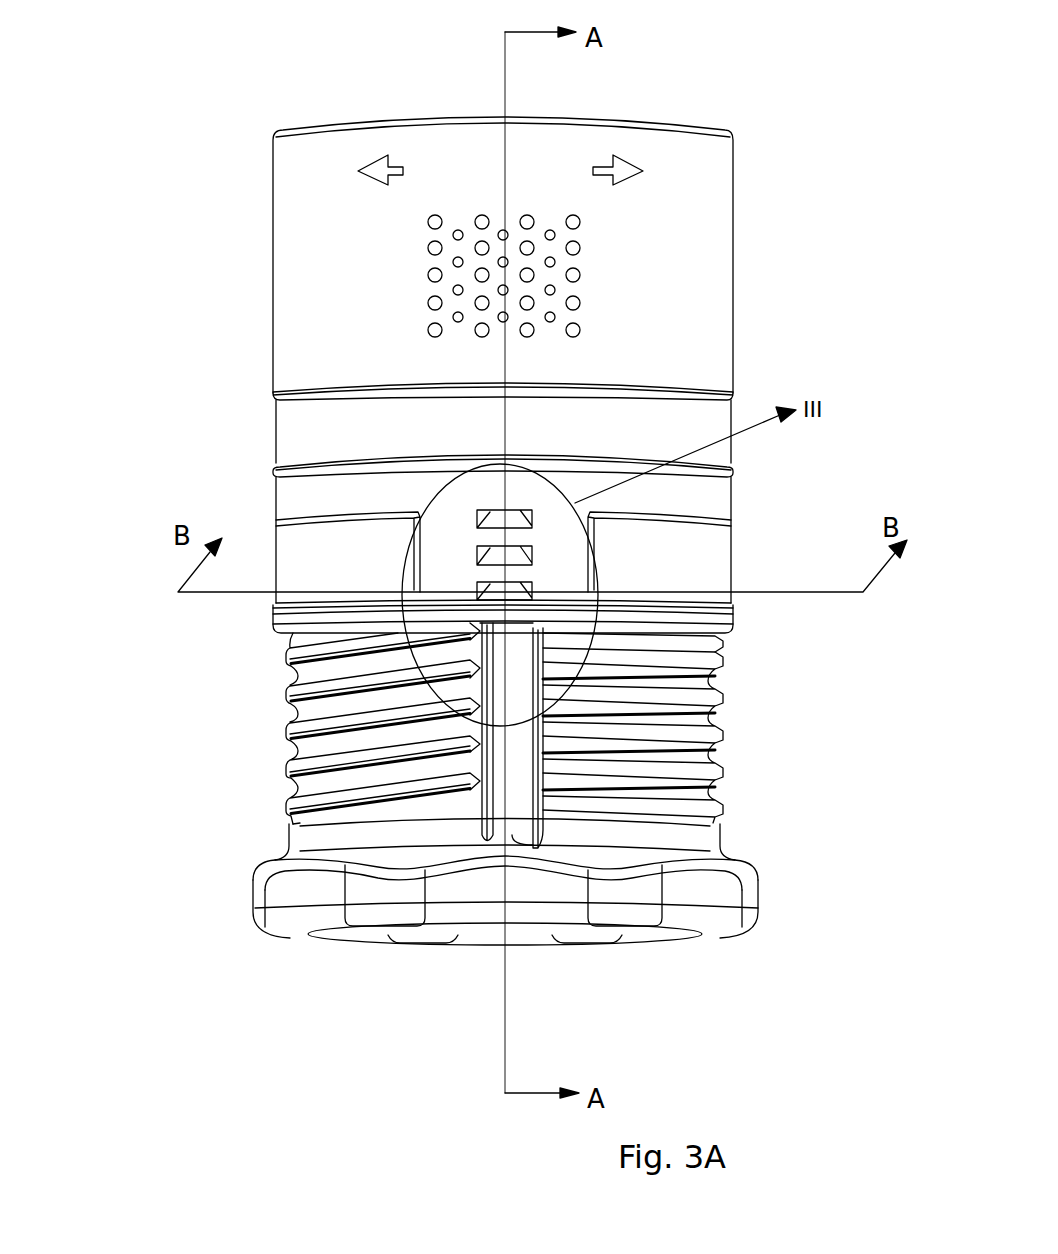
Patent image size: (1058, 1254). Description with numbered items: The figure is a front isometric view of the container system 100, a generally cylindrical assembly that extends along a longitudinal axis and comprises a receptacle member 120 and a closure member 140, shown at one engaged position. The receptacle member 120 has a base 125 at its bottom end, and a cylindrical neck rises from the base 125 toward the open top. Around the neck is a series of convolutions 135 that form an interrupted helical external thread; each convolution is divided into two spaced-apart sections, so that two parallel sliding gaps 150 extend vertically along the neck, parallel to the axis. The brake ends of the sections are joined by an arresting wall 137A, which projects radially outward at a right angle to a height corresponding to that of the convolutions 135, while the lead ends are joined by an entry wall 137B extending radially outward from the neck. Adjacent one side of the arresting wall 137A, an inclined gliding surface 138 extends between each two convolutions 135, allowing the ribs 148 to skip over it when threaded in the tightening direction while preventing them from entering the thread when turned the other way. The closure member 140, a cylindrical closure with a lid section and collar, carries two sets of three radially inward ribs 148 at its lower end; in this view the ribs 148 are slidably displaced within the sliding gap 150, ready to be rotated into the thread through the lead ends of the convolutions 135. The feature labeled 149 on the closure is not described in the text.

The container system 100 is at (818, 70).
The closure member 140 is at (752, 280).
The cap skirt band 149 is at (710, 573).
The ribs 148 is at (513, 557).
The receptacle member 120 is at (238, 738).
The convolutions 135 is at (290, 662).
The sliding gaps 150 is at (512, 785).
The arresting wall 137A is at (705, 840).
The entry wall 137B is at (297, 825).
The gliding surface 138 is at (720, 825).
The base 125 is at (296, 961).